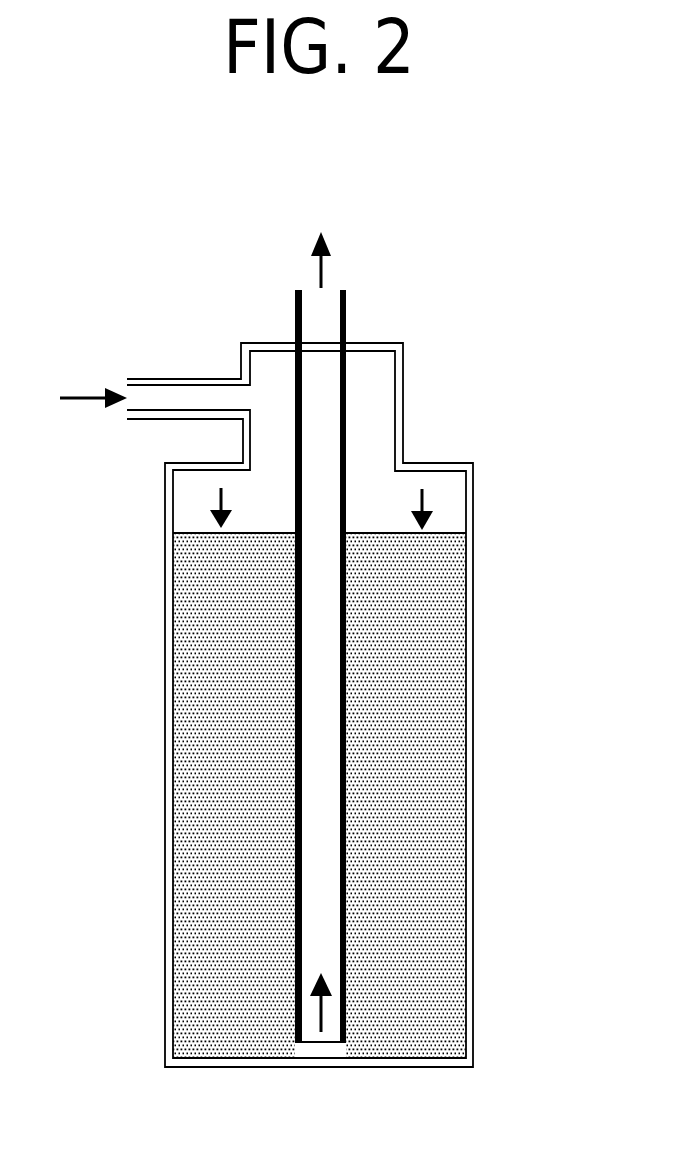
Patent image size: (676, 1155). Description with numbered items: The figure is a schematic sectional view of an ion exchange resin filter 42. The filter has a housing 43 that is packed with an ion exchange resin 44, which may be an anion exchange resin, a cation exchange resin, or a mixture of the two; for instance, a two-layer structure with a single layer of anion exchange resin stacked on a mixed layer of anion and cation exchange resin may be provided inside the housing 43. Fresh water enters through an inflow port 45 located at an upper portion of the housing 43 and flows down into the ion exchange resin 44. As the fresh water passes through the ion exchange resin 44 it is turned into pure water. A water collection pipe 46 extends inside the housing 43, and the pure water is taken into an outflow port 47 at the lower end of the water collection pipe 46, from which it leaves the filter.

The ion exchange resin filter 42 is at (310, 670).
The housing 43 is at (448, 463).
The ion exchange resin 44 is at (361, 532).
The inflow port 45 is at (126, 392).
The water collection pipe 46 is at (347, 325).
The outflow port 47 is at (327, 1043).